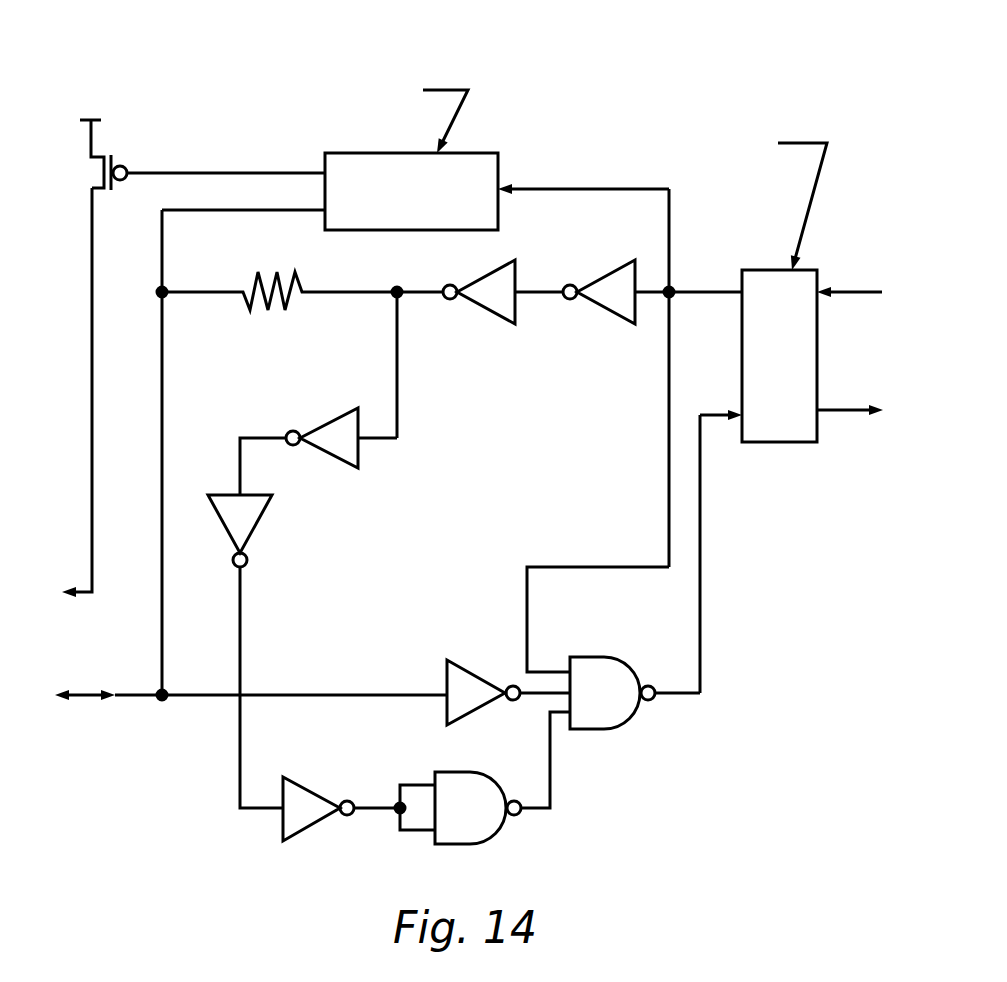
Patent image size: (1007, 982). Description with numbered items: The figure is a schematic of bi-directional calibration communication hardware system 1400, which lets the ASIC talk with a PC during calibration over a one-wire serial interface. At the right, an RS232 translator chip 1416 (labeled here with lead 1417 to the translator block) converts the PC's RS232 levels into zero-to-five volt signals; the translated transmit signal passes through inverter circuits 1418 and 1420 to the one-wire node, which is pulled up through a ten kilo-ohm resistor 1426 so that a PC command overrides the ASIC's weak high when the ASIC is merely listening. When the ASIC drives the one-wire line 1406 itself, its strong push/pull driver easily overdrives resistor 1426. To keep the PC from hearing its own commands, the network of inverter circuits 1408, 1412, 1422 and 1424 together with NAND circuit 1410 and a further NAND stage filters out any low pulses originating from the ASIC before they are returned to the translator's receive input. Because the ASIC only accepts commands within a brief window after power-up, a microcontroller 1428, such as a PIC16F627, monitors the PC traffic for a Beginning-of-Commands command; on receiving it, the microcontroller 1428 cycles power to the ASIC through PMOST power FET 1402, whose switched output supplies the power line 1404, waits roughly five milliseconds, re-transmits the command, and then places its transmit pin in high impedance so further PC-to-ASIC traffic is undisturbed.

The bi-directional communication hardware system 1400 is at (773, 55).
The PMOST power FET 1402 is at (70, 189).
The power output 1404 is at (56, 537).
The one wire RS232 line 1406 is at (95, 722).
The inverter circuit 1408 is at (304, 829).
The NAND circuit 1410 is at (490, 844).
The inverter circuit 1412 is at (448, 668).
The RS232 translator chip 1416 is at (615, 729).
The RS232 level translator 1417 is at (793, 442).
The inverter circuit 1418 is at (605, 307).
The inverter circuit 1420 is at (483, 307).
The inverter circuit 1422 is at (335, 421).
The inverter circuit 1424 is at (259, 522).
The 10 kΩ resistor 1426 is at (258, 310).
The microcontroller 1428 is at (483, 153).